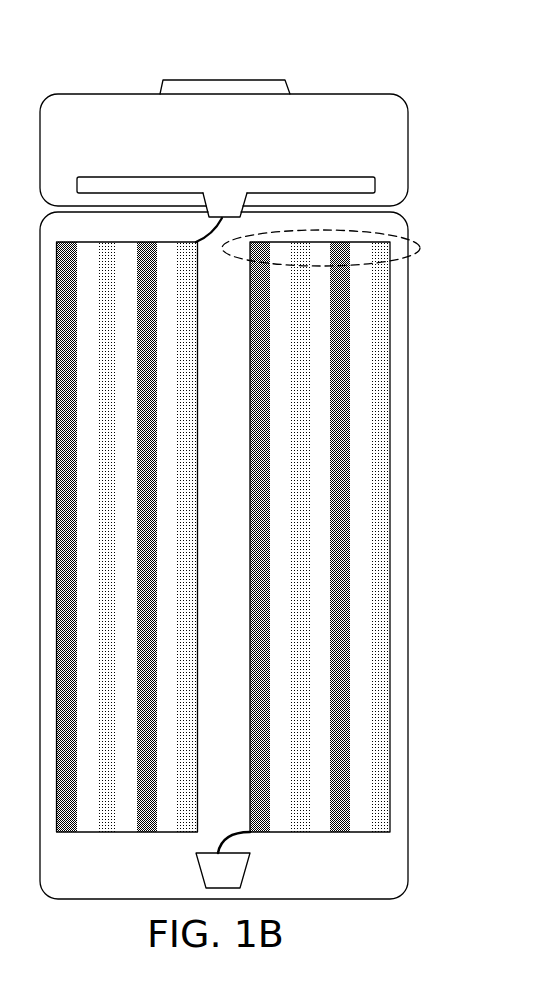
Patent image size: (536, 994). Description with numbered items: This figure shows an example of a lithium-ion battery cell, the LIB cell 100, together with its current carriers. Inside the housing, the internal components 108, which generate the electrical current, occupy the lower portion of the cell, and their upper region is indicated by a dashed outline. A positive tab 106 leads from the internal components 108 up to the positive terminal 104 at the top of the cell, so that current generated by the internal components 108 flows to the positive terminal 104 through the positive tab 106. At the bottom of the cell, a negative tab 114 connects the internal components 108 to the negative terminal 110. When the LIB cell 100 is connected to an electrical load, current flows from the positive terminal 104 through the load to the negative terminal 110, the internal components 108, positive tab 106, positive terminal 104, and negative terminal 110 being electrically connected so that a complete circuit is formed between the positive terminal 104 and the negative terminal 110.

The LIB cell 100 is at (416, 87).
The positive terminal 104 is at (283, 78).
The positive tab 106 is at (207, 226).
The internal components 108 is at (422, 249).
The negative terminal 110 is at (248, 863).
The negative tab 114 is at (247, 836).